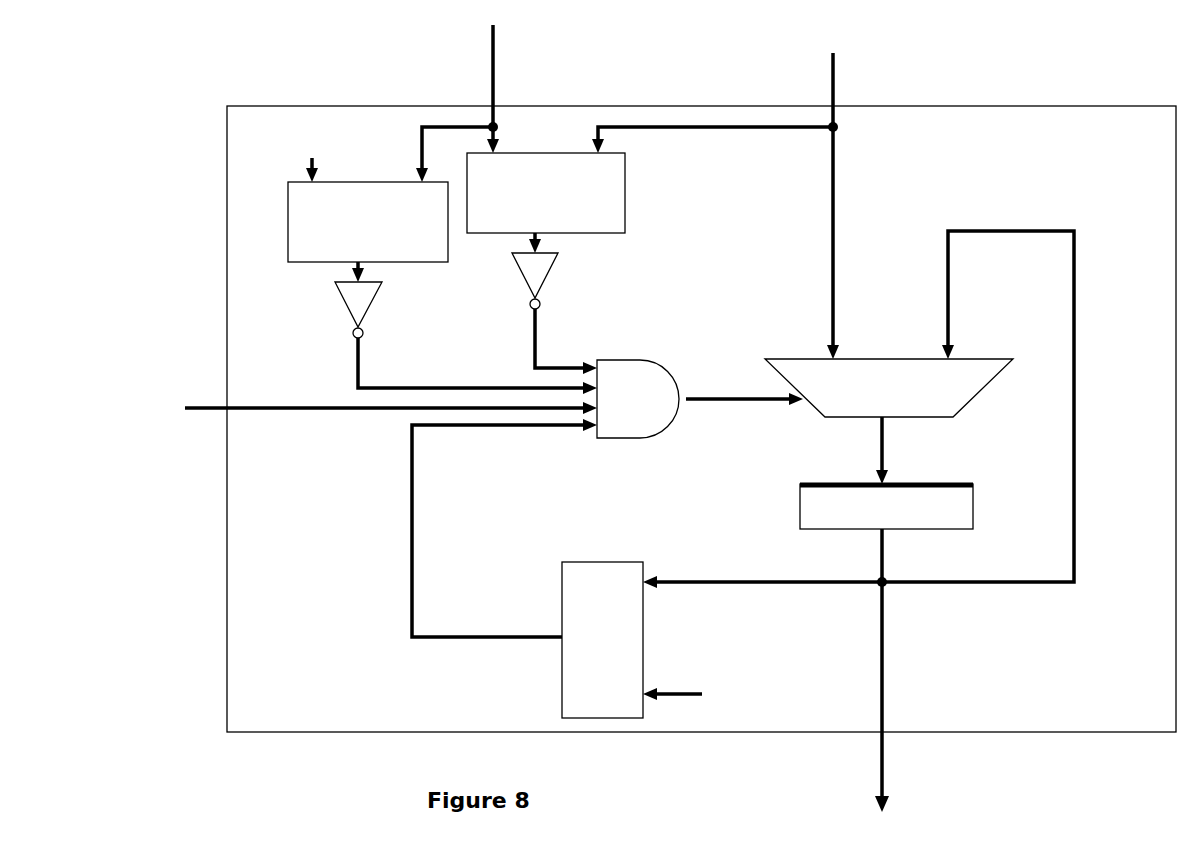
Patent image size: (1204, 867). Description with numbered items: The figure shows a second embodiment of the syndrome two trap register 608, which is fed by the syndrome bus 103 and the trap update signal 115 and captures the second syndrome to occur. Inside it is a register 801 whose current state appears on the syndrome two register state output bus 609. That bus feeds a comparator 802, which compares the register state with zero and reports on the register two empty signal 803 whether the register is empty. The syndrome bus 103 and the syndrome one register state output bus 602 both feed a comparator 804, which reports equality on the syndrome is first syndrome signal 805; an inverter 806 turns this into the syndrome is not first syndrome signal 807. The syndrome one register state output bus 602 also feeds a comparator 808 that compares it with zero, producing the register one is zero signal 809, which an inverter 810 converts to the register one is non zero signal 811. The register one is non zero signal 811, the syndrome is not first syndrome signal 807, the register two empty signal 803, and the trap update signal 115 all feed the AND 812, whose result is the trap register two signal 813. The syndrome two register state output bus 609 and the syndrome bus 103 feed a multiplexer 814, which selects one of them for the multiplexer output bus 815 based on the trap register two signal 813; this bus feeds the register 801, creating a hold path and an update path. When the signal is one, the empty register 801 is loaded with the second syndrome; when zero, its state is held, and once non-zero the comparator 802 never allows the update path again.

The syndrome two trap register 608 is at (253, 197).
The syndrome one register state output bus 602 is at (490, 80).
The syndrome bus 103 is at (840, 105).
The comparator 808 is at (298, 218).
The comparator 804 is at (610, 192).
The syndrome is first syndrome signal 805 is at (555, 240).
The inverter 806 is at (540, 278).
The syndrome is not first syndrome signal 807 is at (540, 338).
The register one is zero signal 809 is at (345, 272).
The inverter 810 is at (353, 295).
The register one is non zero signal 811 is at (362, 366).
The trap update signal 115 is at (217, 400).
The AND 812 is at (640, 380).
The trap register two signal 813 is at (713, 390).
The multiplexer 814 is at (840, 408).
The multiplexer output bus 815 is at (875, 438).
The register 801 is at (818, 506).
The comparator 802 is at (622, 650).
The register two empty signal 803 is at (403, 567).
The syndrome two register state output bus 609 is at (888, 595).